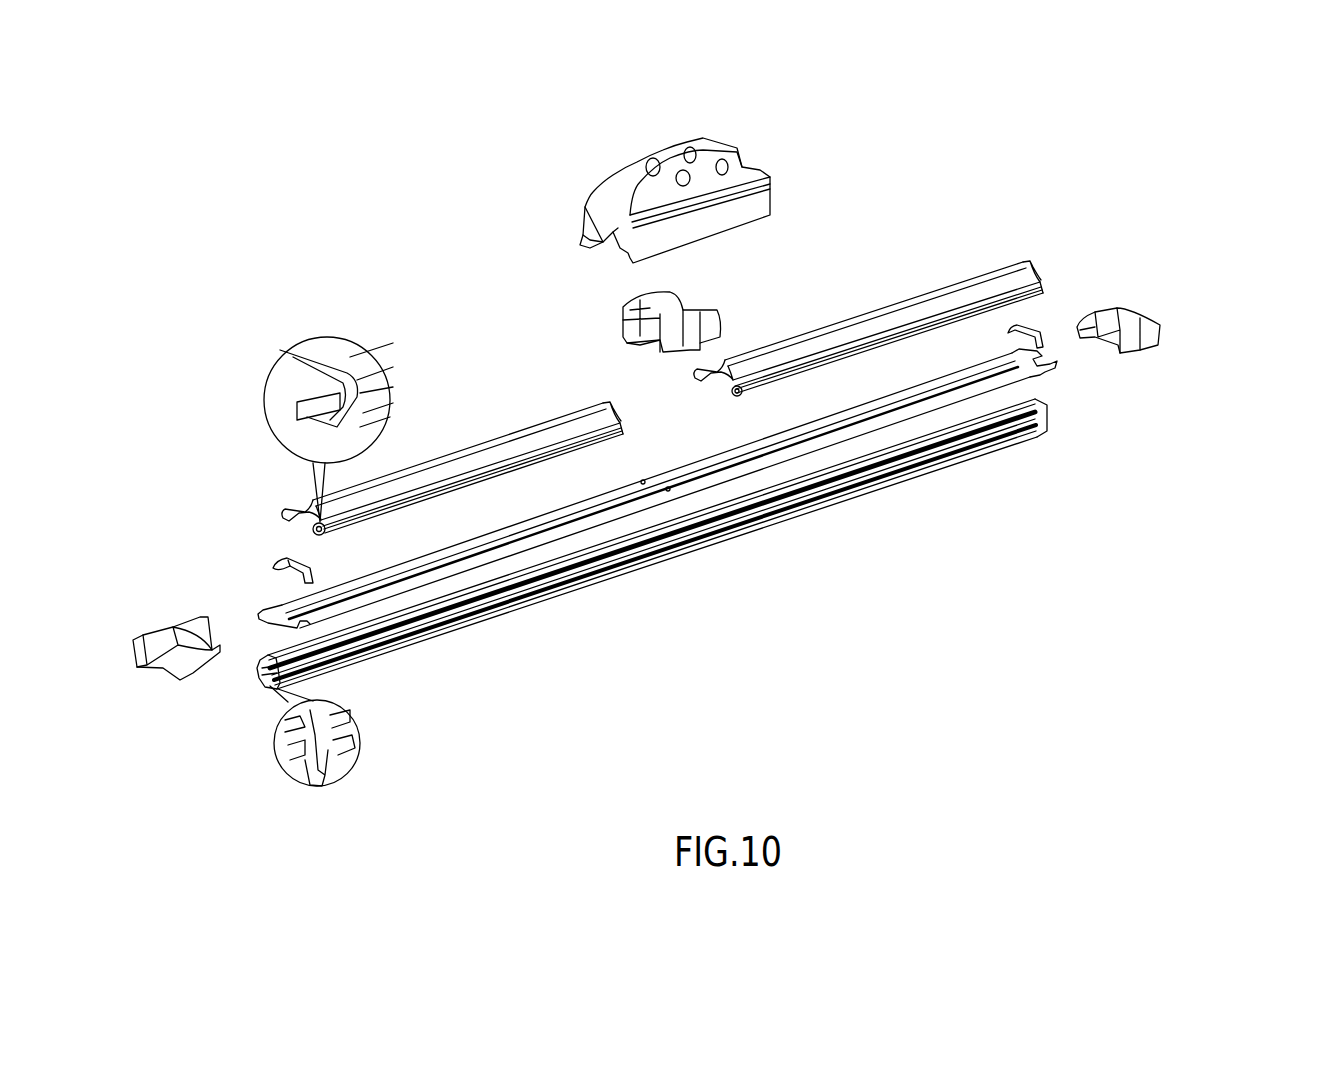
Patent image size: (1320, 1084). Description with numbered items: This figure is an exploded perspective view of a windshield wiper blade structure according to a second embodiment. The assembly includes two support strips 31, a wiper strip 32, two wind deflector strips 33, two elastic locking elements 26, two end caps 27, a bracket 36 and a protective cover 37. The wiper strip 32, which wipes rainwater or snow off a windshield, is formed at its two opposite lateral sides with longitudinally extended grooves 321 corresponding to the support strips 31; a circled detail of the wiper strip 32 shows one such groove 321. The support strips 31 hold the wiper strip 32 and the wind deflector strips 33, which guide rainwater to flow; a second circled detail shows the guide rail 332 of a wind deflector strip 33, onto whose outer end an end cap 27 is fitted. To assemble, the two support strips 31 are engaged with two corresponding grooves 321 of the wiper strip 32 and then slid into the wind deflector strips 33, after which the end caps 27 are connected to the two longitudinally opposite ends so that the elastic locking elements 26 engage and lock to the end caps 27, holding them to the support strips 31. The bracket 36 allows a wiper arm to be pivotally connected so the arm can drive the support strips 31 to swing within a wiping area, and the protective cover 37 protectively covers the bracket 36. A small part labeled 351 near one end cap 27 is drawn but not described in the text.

The elastic locking element 26 is at (283, 560).
The end cap 27 is at (1170, 287).
The support strip 31 is at (1057, 366).
The wiper strip 32 is at (1047, 450).
The groove 321 is at (353, 733).
The wind deflector strip 33 is at (1000, 280).
The guide rail 332 is at (300, 398).
The cover 351 is at (1153, 323).
The bracket 36 is at (706, 318).
The protective cover 37 is at (765, 207).